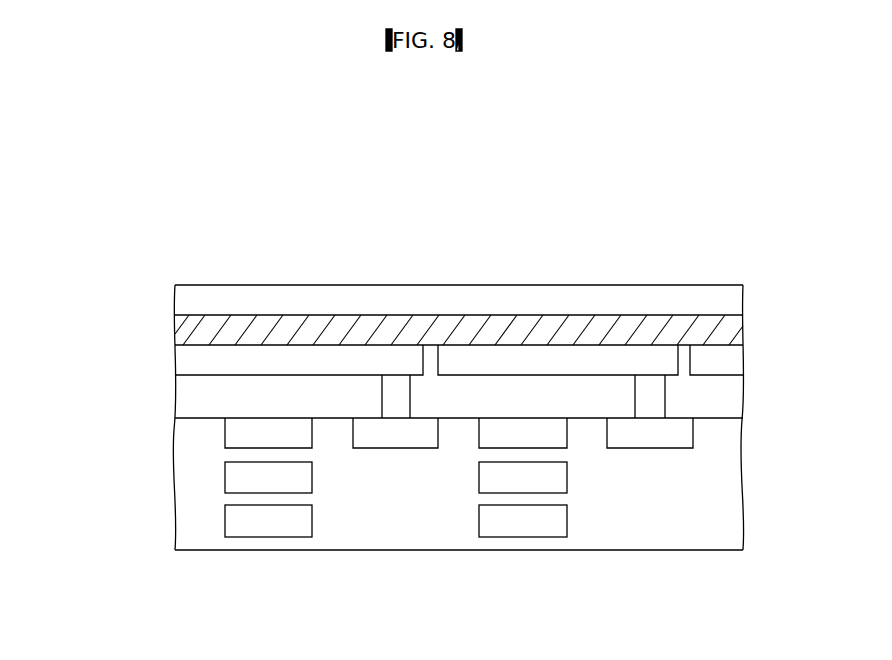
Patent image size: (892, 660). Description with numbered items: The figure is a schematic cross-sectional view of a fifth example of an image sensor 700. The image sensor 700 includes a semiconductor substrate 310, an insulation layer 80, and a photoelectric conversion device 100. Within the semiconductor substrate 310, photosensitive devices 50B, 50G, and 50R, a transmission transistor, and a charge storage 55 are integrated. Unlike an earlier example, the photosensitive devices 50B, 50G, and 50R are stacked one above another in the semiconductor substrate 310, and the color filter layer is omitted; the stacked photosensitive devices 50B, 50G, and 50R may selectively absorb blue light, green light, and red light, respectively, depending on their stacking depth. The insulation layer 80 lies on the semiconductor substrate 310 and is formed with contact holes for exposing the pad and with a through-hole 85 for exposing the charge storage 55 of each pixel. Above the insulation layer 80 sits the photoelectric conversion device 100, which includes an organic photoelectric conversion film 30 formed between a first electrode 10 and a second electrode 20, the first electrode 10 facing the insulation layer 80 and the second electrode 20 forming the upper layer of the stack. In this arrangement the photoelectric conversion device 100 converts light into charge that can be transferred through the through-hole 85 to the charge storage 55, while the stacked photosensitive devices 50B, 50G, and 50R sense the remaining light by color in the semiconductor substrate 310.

The image sensor 700 is at (698, 188).
The photoelectric conversion device 100 is at (384, 330).
The second electrode 20 is at (193, 300).
The photoelectric conversion film 30 is at (193, 332).
The first electrode 10 is at (418, 360).
The insulation layer 80 is at (727, 397).
The through-hole 85 is at (637, 403).
The semiconductor substrate 310 is at (727, 505).
The photosensitive device 50B is at (258, 433).
The photosensitive device 50R is at (263, 520).
The photosensitive device 50G is at (300, 482).
The charge storage 55 is at (397, 433).